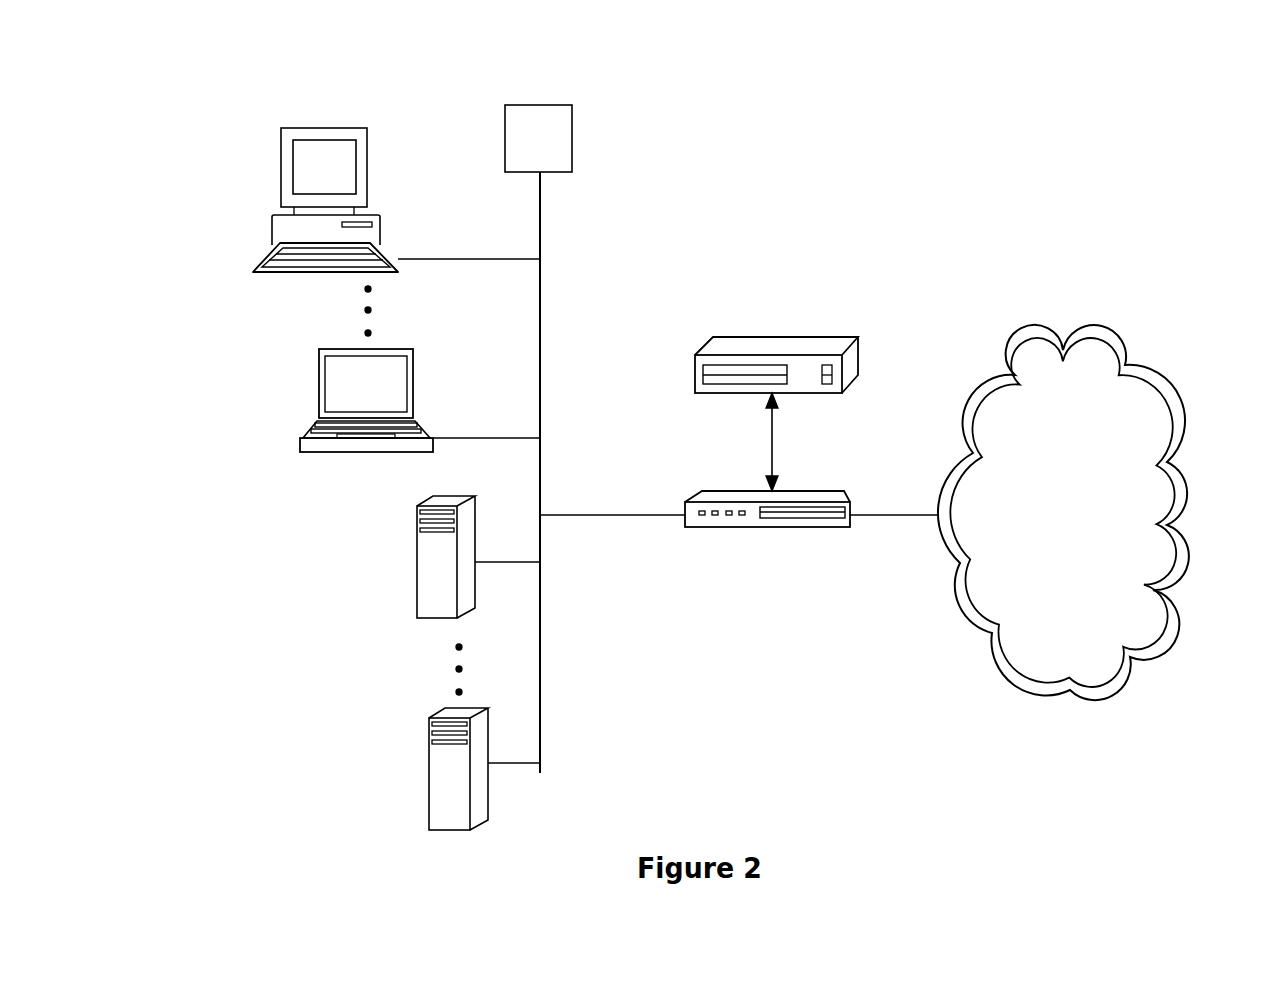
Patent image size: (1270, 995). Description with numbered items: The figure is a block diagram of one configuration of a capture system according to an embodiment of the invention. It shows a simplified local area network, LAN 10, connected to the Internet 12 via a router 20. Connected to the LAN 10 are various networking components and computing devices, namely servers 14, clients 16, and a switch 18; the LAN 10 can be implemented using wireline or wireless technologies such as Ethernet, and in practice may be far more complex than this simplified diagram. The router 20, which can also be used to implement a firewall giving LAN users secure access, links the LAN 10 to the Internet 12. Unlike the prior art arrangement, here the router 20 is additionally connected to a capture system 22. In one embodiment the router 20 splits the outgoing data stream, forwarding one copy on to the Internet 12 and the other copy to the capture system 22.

The local area network (LAN) 10 is at (423, 472).
The Internet 12 is at (1063, 512).
The servers 14 is at (400, 587).
The clients 16 is at (255, 242).
The switch 18 is at (548, 93).
The router 20 is at (768, 534).
The capture system 22 is at (782, 325).